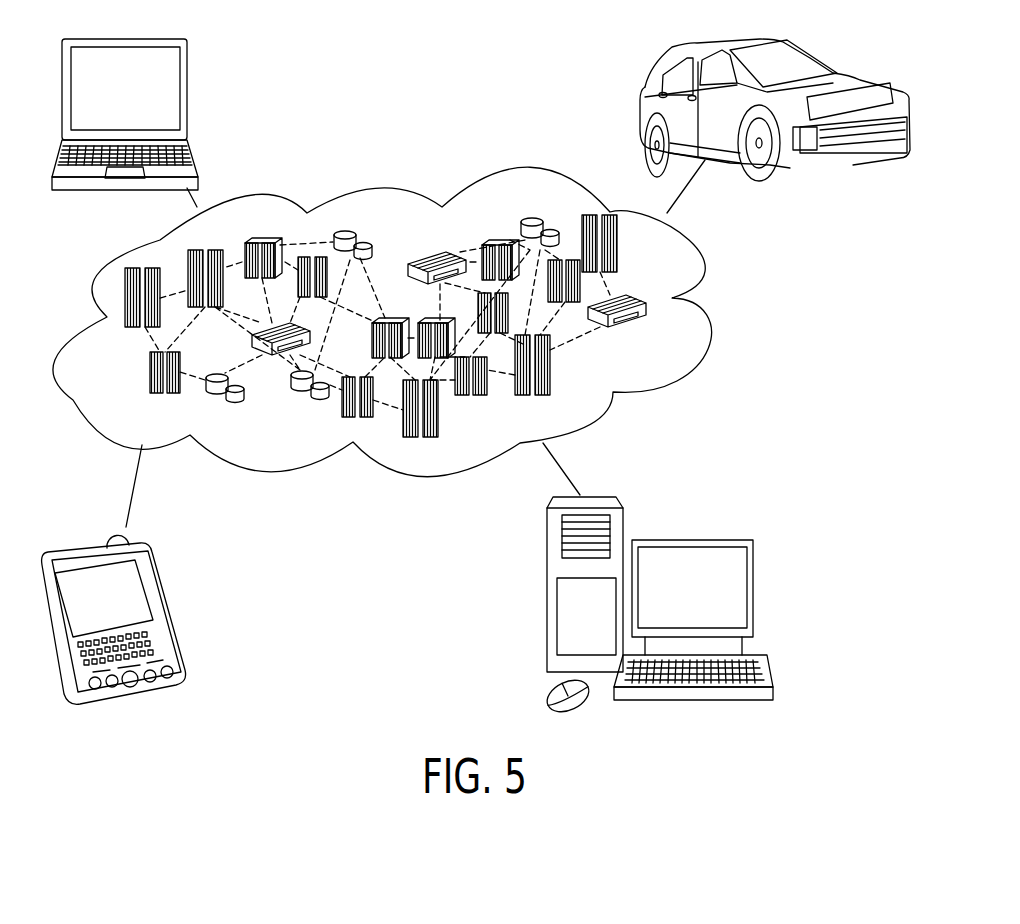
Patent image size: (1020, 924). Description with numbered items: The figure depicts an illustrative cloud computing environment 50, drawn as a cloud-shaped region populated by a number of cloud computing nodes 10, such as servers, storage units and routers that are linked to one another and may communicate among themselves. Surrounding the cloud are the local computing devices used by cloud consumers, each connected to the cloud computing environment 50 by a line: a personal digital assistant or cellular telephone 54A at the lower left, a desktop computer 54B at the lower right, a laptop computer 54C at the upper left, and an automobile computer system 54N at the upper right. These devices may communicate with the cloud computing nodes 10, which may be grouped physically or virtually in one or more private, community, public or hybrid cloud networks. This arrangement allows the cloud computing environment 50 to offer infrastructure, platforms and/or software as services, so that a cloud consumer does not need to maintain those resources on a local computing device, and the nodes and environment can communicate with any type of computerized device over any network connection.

The cloud computing node 10 is at (660, 348).
The cloud computing environment 50 is at (710, 252).
The personal digital assistant (PDA) or cellular telephone 54A is at (158, 588).
The desktop computer 54B is at (755, 588).
The laptop computer 54C is at (187, 92).
The automobile computer system 54N is at (828, 70).